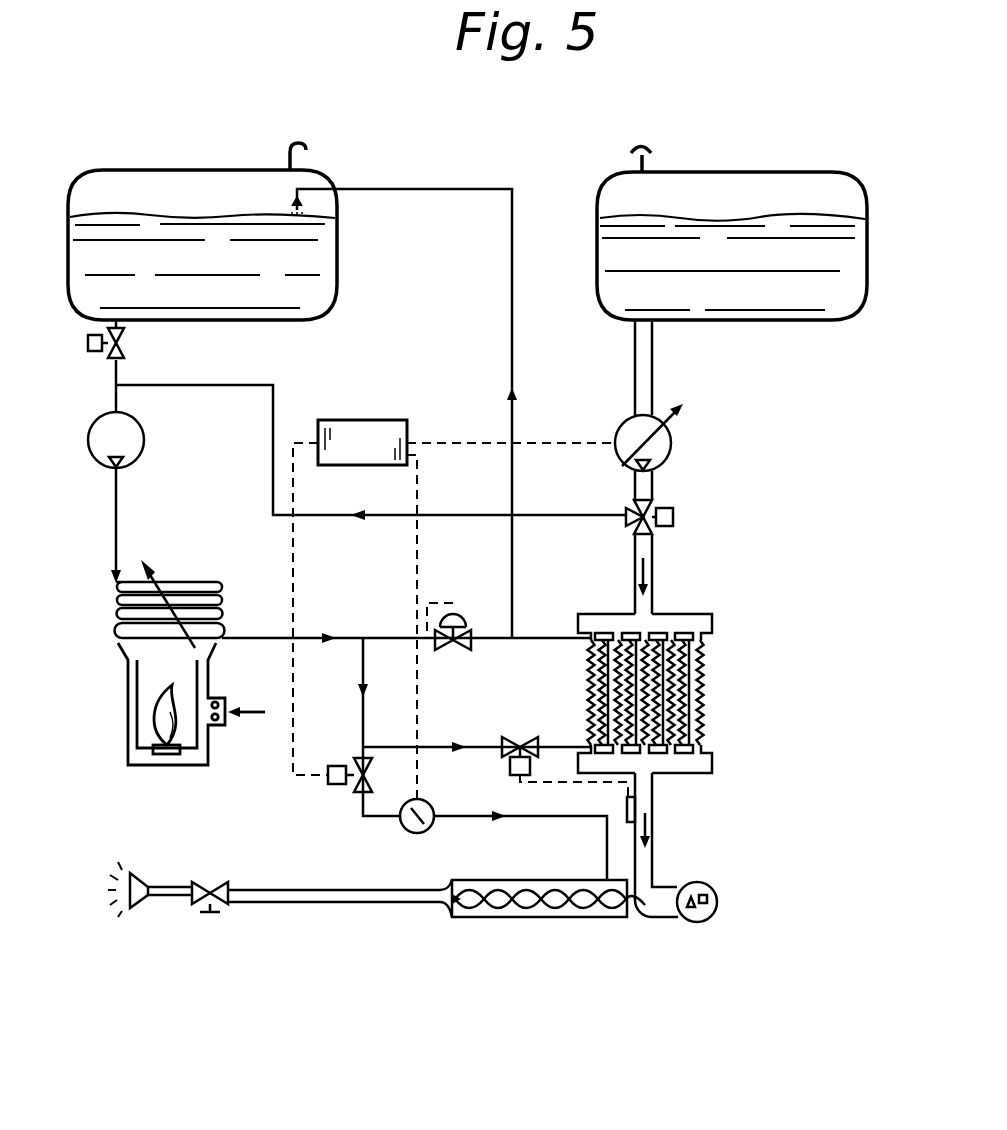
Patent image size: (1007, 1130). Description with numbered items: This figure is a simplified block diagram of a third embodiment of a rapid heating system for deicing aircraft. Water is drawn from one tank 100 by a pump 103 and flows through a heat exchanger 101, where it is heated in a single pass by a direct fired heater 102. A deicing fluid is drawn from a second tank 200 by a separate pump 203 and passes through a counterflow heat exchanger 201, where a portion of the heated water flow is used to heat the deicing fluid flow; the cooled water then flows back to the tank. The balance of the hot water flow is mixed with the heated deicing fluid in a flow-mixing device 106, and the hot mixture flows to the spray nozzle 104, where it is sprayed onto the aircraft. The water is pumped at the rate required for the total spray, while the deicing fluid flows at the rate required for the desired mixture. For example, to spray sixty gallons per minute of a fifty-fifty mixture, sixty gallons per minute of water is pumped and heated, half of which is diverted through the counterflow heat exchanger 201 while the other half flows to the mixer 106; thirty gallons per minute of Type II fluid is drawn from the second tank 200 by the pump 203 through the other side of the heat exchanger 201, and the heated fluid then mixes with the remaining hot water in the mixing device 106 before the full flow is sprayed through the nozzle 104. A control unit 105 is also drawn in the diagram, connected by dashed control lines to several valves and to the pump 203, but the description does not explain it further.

The tank 100 is at (242, 170).
The second tank 200 is at (772, 172).
The heat exchanger 101 is at (222, 620).
The direct fired heater 102 is at (128, 704).
The pump 103 is at (88, 443).
The spray nozzle 104 is at (122, 902).
The controller 105 is at (407, 415).
The flow-mixing device 106 is at (478, 915).
The counterflow heat exchanger 201 is at (706, 662).
The pump 203 is at (672, 446).